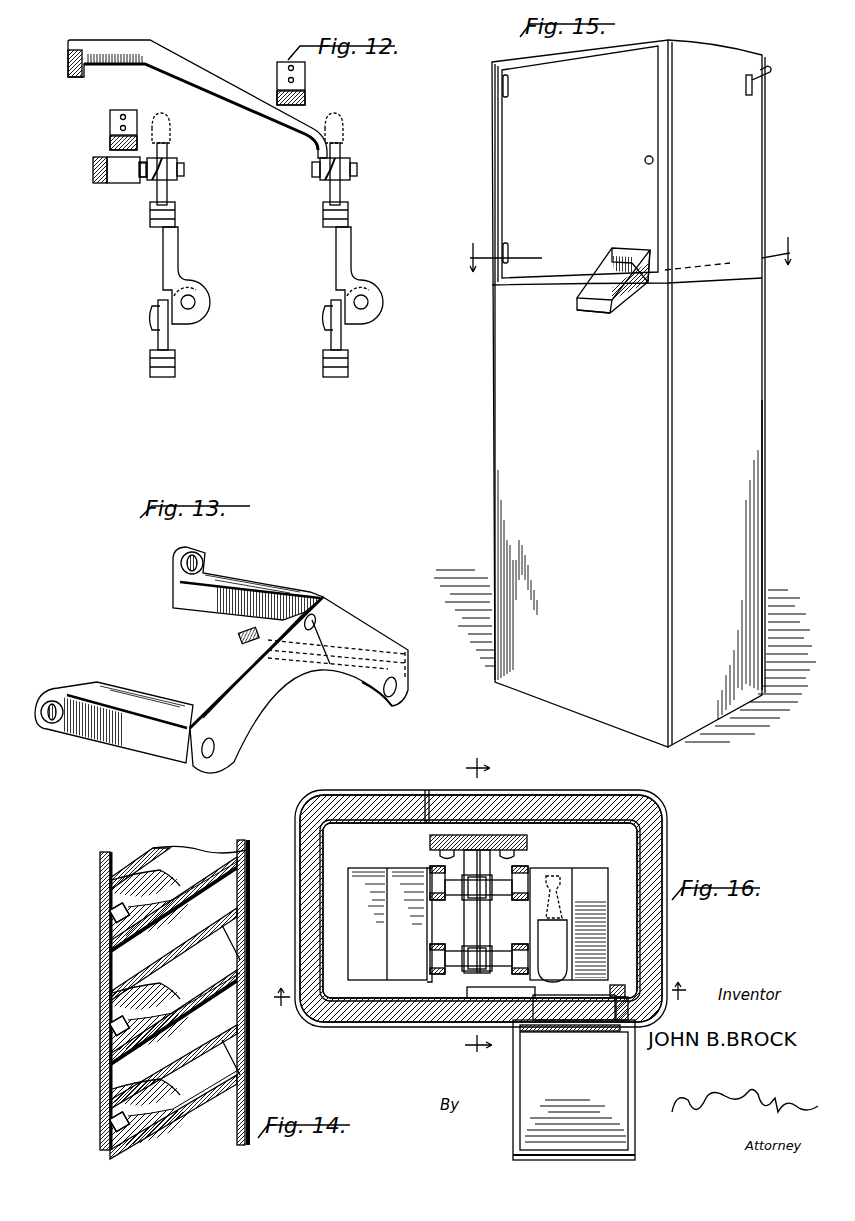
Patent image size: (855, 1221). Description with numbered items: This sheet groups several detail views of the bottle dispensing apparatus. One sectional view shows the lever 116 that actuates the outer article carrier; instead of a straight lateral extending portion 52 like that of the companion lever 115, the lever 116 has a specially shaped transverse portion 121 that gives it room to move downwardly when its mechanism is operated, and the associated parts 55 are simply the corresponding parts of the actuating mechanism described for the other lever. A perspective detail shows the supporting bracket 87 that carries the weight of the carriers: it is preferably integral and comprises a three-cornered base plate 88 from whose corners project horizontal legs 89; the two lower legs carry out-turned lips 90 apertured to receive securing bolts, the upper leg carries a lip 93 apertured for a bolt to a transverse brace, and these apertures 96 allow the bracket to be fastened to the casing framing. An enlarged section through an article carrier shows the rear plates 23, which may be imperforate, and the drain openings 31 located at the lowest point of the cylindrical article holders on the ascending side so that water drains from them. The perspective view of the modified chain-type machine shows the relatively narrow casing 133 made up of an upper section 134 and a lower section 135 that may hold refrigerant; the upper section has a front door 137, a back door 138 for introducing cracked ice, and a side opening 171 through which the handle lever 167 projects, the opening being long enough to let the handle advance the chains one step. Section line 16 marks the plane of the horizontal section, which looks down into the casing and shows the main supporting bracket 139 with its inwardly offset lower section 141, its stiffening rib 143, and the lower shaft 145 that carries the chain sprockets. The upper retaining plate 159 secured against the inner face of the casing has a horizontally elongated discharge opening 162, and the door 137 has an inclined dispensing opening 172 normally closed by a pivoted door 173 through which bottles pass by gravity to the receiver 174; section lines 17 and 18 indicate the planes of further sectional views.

In FIG. 12, the lever 116 is at (68, 66).
In FIG. 12, the transverse portion of lever 121 is at (222, 70).
In FIG. 12, the mounting bracket 55 is at (110, 125).
In FIG. 12, the lever 115 is at (93, 170).
In FIG. 12, the lateral extending portion of lever 52 is at (122, 181).
In FIG. 13, the lip 93 is at (202, 560).
In FIG. 13, the horizontal legs 89 is at (252, 588).
In FIG. 13, the hole 96 is at (312, 614).
In FIG. 13, the supporting bracket 87 is at (338, 595).
In FIG. 13, the three-cornered base plate 88 is at (368, 624).
In FIG. 13, the out-turned lips 90 is at (52, 698).
In FIG. 15, the handle lever 167 is at (772, 71).
In FIG. 15, the opening 171 is at (746, 87).
In FIG. 15, the door 137 is at (528, 158).
In FIG. 16, the door 137 is at (373, 1028).
In FIG. 15, the upper casing section 134 is at (752, 158).
In FIG. 15, the section line 16— 16 is at (633, 250).
In FIG. 15, the pivoted door 173 is at (612, 258).
In FIG. 16, the pivoted door 173 is at (600, 1040).
In FIG. 15, the receiver 174 is at (600, 314).
In FIG. 16, the receiver 174 is at (610, 1118).
In FIG. 15, the casing 133 is at (752, 367).
In FIG. 15, the lower casing section 135 is at (756, 462).
In FIG. 14, the rear plates 23 is at (100, 932).
In FIG. 14, the drain opening 31 is at (100, 966).
In FIG. 16, the door 138 is at (396, 790).
In FIG. 16, the section line 18 is at (478, 907).
In FIG. 16, the lower section of supporting bracket 141 is at (503, 833).
In FIG. 16, the main supporting bracket 139 is at (520, 833).
In FIG. 16, the rib 143 is at (522, 852).
In FIG. 16, the lower shaft 145 is at (470, 907).
In FIG. 16, the discharge opening 162 is at (600, 990).
In FIG. 16, the upper retaining plate 159 is at (616, 995).
In FIG. 16, the section line 17 is at (491, 1005).
In FIG. 16, the dispensing opening 172 is at (576, 1040).